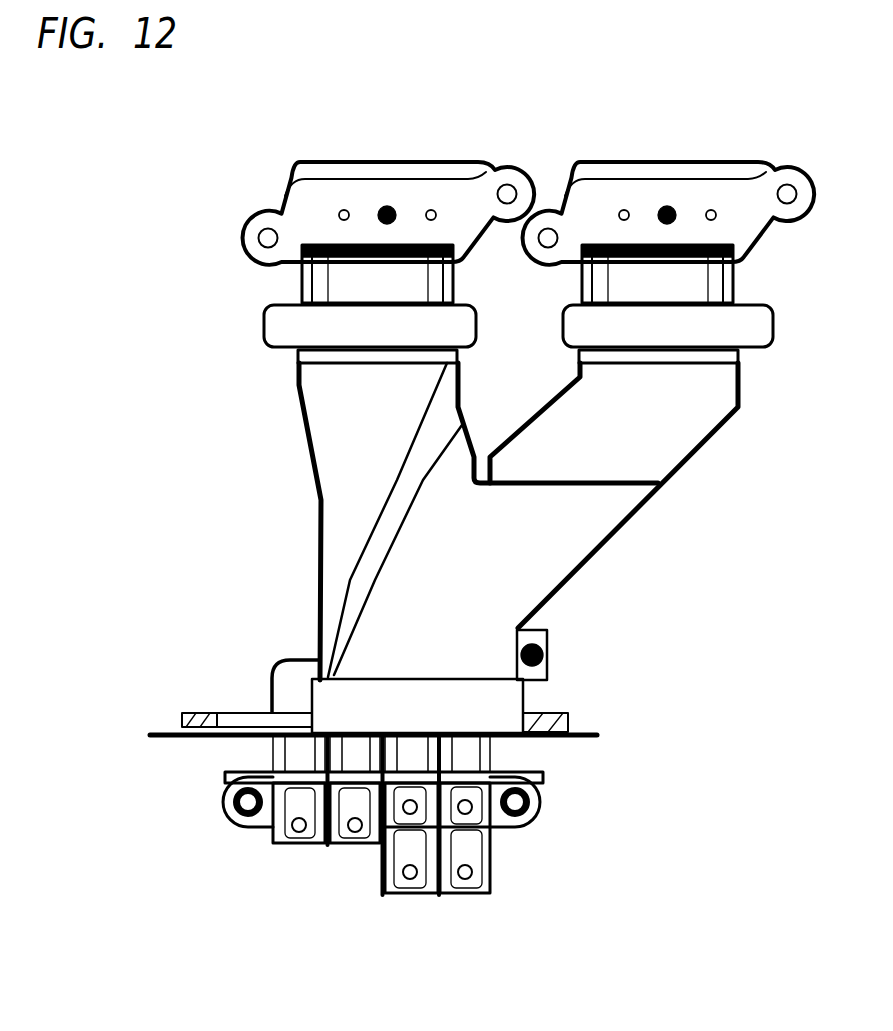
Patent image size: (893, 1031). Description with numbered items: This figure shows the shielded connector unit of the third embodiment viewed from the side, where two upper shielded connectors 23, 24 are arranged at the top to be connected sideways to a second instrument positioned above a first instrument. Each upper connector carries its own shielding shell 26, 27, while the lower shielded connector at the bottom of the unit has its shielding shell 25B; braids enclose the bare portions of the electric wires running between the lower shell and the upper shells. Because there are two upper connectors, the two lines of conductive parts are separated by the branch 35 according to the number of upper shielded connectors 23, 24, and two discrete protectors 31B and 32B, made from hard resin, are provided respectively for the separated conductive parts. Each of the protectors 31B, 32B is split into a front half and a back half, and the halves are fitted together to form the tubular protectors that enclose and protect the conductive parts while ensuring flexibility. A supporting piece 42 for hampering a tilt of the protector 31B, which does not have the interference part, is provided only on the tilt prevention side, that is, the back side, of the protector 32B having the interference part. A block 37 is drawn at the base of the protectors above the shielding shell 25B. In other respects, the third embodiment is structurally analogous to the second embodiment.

The upper shielded connector 23 is at (669, 218).
The upper shielded connector 24 is at (389, 221).
The shielding shell 26 is at (692, 162).
The shielding shell 27 is at (358, 162).
The shielding shell 25B is at (595, 730).
The protector 31B is at (648, 521).
The protector 32B is at (337, 418).
The branch 35 is at (488, 444).
The mounting block 37 is at (517, 695).
The supporting piece 42 is at (600, 525).